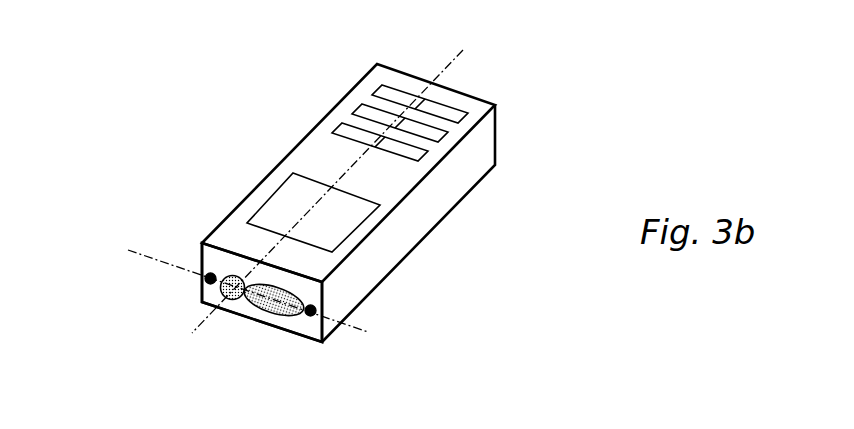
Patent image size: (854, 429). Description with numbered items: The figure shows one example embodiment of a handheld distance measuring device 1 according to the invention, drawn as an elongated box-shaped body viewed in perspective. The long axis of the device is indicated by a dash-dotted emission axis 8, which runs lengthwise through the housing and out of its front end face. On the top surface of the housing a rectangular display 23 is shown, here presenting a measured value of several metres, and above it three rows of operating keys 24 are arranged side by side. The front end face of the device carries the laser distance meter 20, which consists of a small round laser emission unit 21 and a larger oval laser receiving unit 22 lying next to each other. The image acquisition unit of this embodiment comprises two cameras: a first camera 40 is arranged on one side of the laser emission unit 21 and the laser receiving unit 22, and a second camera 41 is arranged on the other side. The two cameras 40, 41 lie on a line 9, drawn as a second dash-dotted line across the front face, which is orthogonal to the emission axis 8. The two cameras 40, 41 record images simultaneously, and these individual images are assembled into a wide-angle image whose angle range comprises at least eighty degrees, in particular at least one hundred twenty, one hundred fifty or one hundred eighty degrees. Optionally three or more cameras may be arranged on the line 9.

The handheld distance measuring device 1 is at (399, 203).
The emission axis 8 is at (338, 175).
The line 9 is at (158, 258).
The laser distance meter 20 is at (217, 328).
The laser emission unit 21 is at (228, 277).
The laser receiving unit 22 is at (273, 307).
The display 23 is at (272, 203).
The operating keys 24 is at (365, 110).
The first camera 40 is at (314, 315).
The second camera 41 is at (207, 283).